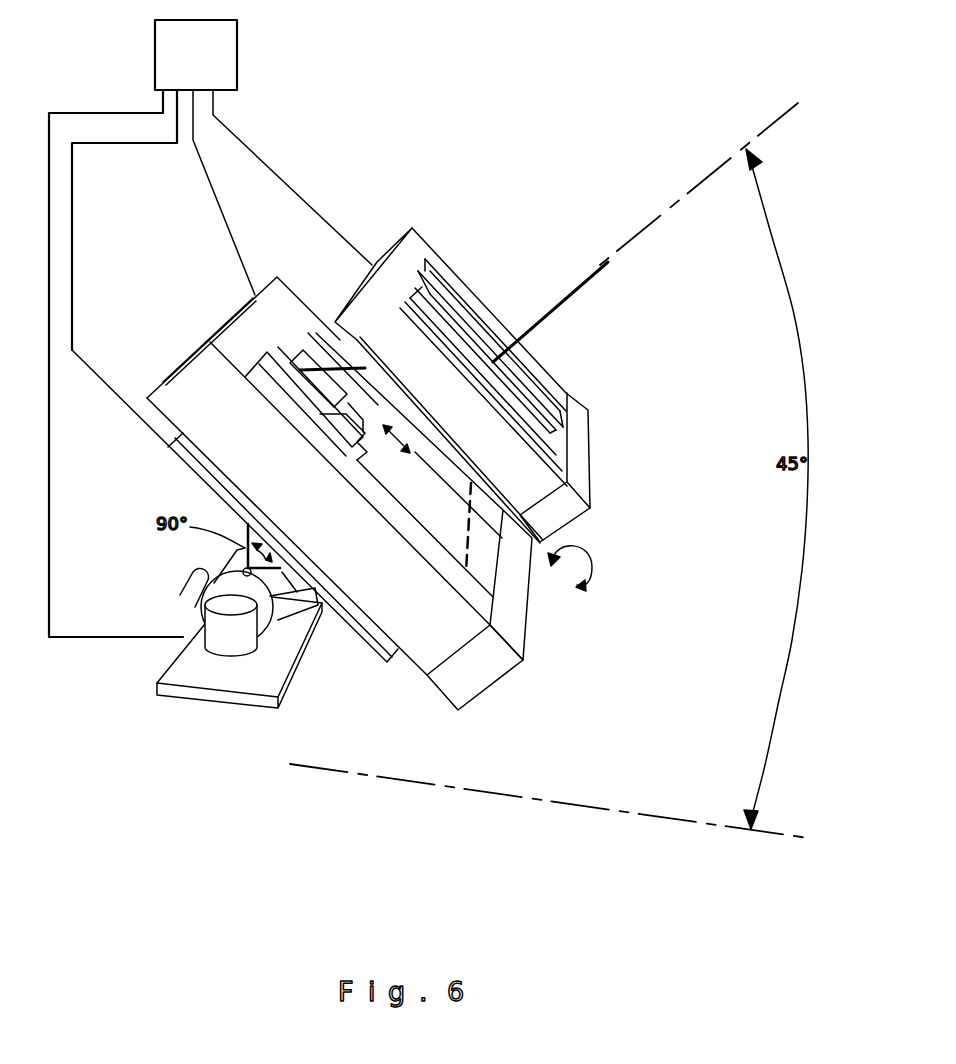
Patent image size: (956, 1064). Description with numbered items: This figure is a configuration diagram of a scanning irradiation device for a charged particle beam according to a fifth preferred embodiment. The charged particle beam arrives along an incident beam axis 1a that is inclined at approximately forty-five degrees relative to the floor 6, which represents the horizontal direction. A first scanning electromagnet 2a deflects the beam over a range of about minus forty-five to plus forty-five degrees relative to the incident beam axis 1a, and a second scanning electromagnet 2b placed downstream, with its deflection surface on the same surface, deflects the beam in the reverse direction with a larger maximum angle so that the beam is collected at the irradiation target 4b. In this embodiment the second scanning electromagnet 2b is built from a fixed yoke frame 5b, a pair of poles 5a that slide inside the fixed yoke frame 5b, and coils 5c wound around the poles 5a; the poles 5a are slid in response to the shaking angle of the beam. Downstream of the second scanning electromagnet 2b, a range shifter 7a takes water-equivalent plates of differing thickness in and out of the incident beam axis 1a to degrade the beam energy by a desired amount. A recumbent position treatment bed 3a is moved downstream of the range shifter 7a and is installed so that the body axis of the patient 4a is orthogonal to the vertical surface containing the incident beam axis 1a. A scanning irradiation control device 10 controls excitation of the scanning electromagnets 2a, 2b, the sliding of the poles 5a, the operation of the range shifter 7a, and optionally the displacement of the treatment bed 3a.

The scanning irradiation control device 10 is at (237, 52).
The incident beam axis 1a is at (578, 288).
The first scanning electromagnet 2a is at (572, 447).
The second scanning electromagnet 2b is at (523, 622).
The recumbent position treatment bed 3a is at (163, 673).
The patient 4a is at (180, 590).
The irradiation target 4b is at (245, 565).
The poles 5a is at (287, 333).
The fixed yoke frame 5b is at (230, 333).
The coils 5c is at (315, 320).
The floor 6 is at (573, 800).
The range shifter 7a is at (390, 663).